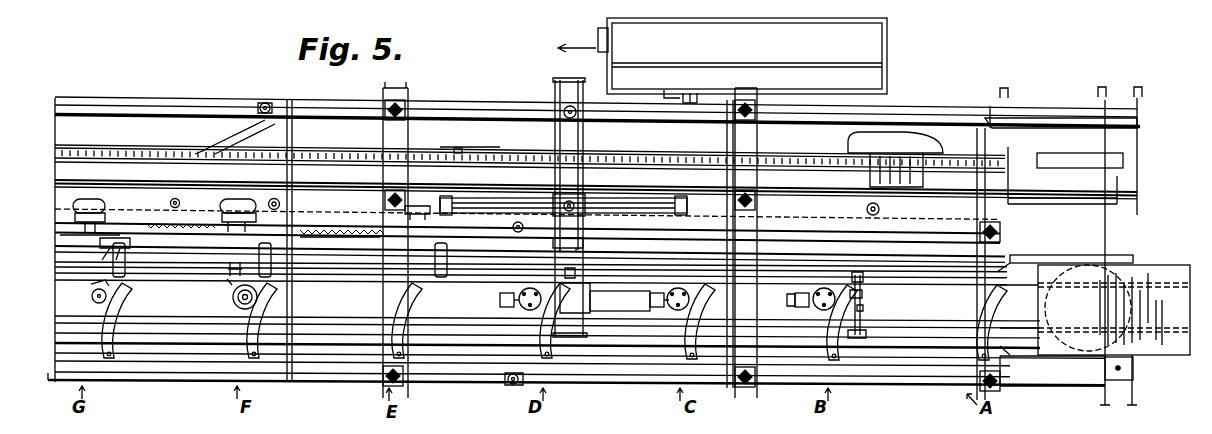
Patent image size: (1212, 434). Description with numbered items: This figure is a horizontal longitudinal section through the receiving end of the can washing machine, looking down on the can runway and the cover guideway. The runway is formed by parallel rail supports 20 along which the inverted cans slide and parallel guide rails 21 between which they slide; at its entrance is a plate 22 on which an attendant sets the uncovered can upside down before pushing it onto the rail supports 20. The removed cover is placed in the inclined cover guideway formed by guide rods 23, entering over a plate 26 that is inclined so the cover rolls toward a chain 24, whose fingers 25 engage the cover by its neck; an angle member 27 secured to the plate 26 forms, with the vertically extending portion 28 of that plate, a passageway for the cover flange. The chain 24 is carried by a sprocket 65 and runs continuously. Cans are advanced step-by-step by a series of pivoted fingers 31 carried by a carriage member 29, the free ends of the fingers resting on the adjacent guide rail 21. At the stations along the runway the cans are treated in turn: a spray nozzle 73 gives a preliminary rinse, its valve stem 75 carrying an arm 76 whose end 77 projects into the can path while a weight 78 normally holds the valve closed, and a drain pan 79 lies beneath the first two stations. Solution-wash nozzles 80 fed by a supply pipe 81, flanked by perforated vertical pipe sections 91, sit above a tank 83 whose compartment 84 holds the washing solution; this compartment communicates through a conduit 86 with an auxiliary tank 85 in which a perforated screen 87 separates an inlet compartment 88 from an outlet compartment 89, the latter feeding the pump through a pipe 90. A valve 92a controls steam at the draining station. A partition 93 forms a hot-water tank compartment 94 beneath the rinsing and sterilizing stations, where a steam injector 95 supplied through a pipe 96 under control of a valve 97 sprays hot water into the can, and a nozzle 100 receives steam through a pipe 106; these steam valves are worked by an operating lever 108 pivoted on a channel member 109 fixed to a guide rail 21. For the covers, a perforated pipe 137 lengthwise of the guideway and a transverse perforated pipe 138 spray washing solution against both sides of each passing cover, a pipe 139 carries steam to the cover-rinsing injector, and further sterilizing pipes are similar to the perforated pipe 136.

The rail supports 20 is at (146, 317).
The guide rails 21 is at (177, 338).
The plate 22 is at (1175, 354).
The guide rods 23 is at (955, 125).
The chain 24 is at (488, 151).
The fingers 25 is at (458, 148).
The plate 26 is at (1109, 186).
The angle member 27 is at (1118, 154).
The vertically extending portion 28 is at (1093, 135).
The carriage member 29 is at (1001, 364).
The fingers 31 is at (991, 305).
The sprocket 65 is at (1005, 174).
The spray nozzle 73 is at (816, 312).
The stem 75 is at (864, 311).
The arm 76 is at (866, 296).
The end 77 is at (857, 278).
The weight 78 is at (868, 335).
The drain pan 79 is at (1053, 383).
The nozzle 80 is at (505, 304).
The supply pipe 81 is at (583, 249).
The tank 83 is at (620, 387).
The compartment 84 is at (527, 133).
The auxiliary tank 85 is at (888, 31).
The conduit 86 is at (664, 90).
The perforated partition or screen 87 is at (737, 51).
The inlet compartment 88 is at (758, 78).
The outlet compartment 89 is at (781, 40).
The pipe 90 is at (601, 30).
The vertical section of pipe 91 is at (513, 227).
The valve 92a is at (415, 205).
The partition 93 is at (292, 300).
The tank compartment 94 is at (212, 311).
The steam injector 95 is at (234, 302).
The supply pipe 96 is at (230, 269).
The valve 97 is at (228, 208).
The nozzle 100 is at (92, 298).
The pipe 106 is at (92, 266).
The operating lever 108 is at (125, 269).
The channel member 109 is at (152, 200).
The perforated pipe 136 is at (880, 210).
The perforated pipe 137 is at (648, 189).
The perforated pipe 138 is at (578, 118).
The pipe 139 is at (284, 93).